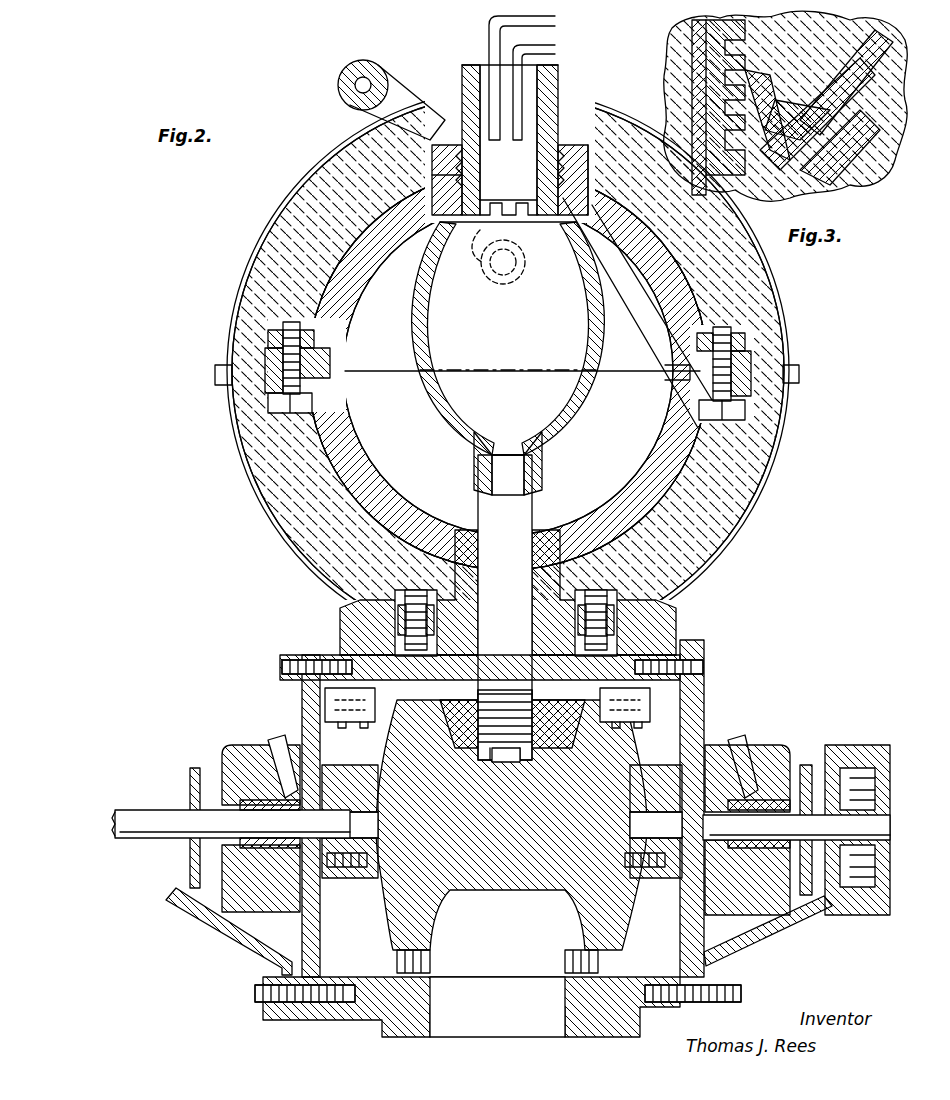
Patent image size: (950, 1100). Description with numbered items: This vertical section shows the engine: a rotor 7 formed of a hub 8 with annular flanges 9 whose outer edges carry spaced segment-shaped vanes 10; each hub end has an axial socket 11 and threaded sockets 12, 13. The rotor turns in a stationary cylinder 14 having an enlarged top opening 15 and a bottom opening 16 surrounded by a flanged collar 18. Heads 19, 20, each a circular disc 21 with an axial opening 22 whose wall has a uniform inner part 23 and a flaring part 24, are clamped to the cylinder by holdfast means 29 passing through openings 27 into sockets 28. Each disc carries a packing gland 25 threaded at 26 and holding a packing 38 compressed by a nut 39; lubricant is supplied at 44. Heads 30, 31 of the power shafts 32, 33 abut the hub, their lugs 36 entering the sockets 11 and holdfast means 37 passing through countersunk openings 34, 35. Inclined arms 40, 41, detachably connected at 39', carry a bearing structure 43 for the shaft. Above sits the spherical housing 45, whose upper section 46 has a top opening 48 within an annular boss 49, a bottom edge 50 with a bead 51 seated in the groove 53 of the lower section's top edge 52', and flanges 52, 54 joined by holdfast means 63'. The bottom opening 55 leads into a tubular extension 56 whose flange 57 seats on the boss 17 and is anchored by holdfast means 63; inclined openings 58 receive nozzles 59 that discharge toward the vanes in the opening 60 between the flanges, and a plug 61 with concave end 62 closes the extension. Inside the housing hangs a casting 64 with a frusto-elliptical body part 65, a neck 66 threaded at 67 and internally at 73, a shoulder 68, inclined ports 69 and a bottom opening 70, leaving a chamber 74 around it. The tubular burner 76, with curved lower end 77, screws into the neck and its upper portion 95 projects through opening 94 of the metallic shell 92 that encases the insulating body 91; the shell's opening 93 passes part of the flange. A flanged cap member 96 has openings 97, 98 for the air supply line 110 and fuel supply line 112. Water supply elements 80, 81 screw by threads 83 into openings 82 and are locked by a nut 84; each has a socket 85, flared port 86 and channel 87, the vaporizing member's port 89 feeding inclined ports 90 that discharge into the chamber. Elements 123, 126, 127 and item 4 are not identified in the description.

In FIG. 2, the sectional metallic spherical shell 92 is at (780, 440).
In FIG. 2, the supporting arm 41 is at (380, 490).
In FIG. 2, the boss 17 is at (400, 640).
In FIG. 2, the holdfast means 63 is at (467, 466).
In FIG. 2, the holdfast means 63' is at (753, 350).
In FIG. 2, the enlarged opening 15 is at (508, 461).
In FIG. 2, the vanes 10 is at (508, 455).
In FIG. 2, the axial socket 11 is at (478, 474).
In FIG. 2, the oppositely inclined ports 90 is at (542, 262).
In FIG. 3, the oppositely inclined ports 90 is at (735, 140).
In FIG. 2, the lower end of burner 77 is at (545, 235).
In FIG. 2, the body part 65 is at (590, 318).
In FIG. 2, the ports 69 is at (425, 376).
In FIG. 2, the opening 70 is at (508, 432).
In FIG. 2, the tubular burner 76 is at (545, 92).
In FIG. 2, the threads 73 is at (440, 178).
In FIG. 2, the head 19 is at (480, 160).
In FIG. 2, the opening 98 is at (505, 42).
In FIG. 2, the flanged cap member 96 is at (525, 62).
In FIG. 2, the fuel supply line 112 is at (490, 34).
In FIG. 2, the air supply line 110 is at (492, 22).
In FIG. 2, the opening 97 is at (472, 62).
In FIG. 2, the upper portion of burner 95 is at (466, 78).
In FIG. 2, the opening 94 is at (462, 92).
In FIG. 2, the water supply element 81 is at (372, 120).
In FIG. 2, the upper semi-spherical section 46 is at (650, 275).
In FIG. 3, the upper semi-spherical section 46 is at (820, 205).
In FIG. 2, the housing 45 is at (605, 500).
In FIG. 2, the threads 67 is at (560, 160).
In FIG. 2, the vertical neck 66 is at (565, 140).
In FIG. 2, the socket 12 is at (565, 160).
In FIG. 2, the annular boss 49 is at (575, 160).
In FIG. 2, the large opening 48 is at (595, 170).
In FIG. 2, the annular shoulder 68 is at (607, 272).
In FIG. 3, the annular shoulder 68 is at (775, 135).
In FIG. 2, the casting 64 is at (598, 300).
In FIG. 3, the casting 64 is at (730, 190).
In FIG. 2, the insulating body 91 is at (735, 300).
In FIG. 3, the insulating body 91 is at (896, 174).
In FIG. 2, the annular flange 52 is at (792, 348).
In FIG. 2, the top edge 52' is at (654, 379).
In FIG. 2, the annular bead 51 is at (685, 385).
In FIG. 2, the annular groove 53 is at (690, 395).
In FIG. 2, the bottom edge 50 is at (340, 372).
In FIG. 2, the annular flange 54 is at (790, 380).
In FIG. 2, the chamber 74 is at (631, 354).
In FIG. 2, the opening 55 is at (505, 535).
In FIG. 2, the depending tubular extension 56 is at (545, 540).
In FIG. 2, the peripheral annular flange 57 is at (540, 625).
In FIG. 2, the aligning openings 58 is at (511, 644).
In FIG. 2, the nozzle 59 is at (540, 672).
In FIG. 2, the head 30 is at (299, 816).
In FIG. 2, the head 20 is at (706, 688).
In FIG. 2, the circular disc 21 is at (708, 700).
In FIG. 2, the bolt 126 is at (330, 660).
In FIG. 2, the bolt 127 is at (295, 660).
In FIG. 2, the opening 93 is at (700, 650).
In FIG. 2, the screw threaded sockets 28 is at (668, 660).
In FIG. 2, the openings 27 is at (690, 660).
In FIG. 2, the flange 123 is at (712, 690).
In FIG. 2, the head 31 is at (721, 708).
In FIG. 2, the rotor 7 is at (497, 905).
In FIG. 2, the hub 8 is at (485, 850).
In FIG. 2, the opening 60 is at (512, 807).
In FIG. 2, the plug 61 is at (488, 750).
In FIG. 2, the concave curvature 62 is at (505, 700).
In FIG. 2, the socket 13 is at (501, 800).
In FIG. 2, the annular flange 9 is at (410, 735).
In FIG. 2, the holdfast means 37 is at (501, 833).
In FIG. 2, the gear 4 is at (350, 725).
In FIG. 2, the countersunk opening 34 is at (350, 808).
In FIG. 2, the countersunk opening 35 is at (493, 882).
In FIG. 2, the lug 36 is at (497, 949).
In FIG. 2, the annular boss or packing gland 25 is at (222, 760).
In FIG. 2, the threads 26 is at (222, 872).
In FIG. 2, the compressing and retaining nut 39 is at (492, 816).
In FIG. 2, the power transmitting shaft 32 is at (135, 820).
In FIG. 2, the lubricant supply means 44 is at (258, 736).
In FIG. 2, the outer part of opening wall 24 is at (272, 740).
In FIG. 2, the inner part of opening wall 23 is at (300, 760).
In FIG. 2, the axial opening 22 is at (742, 760).
In FIG. 2, the packing 38 is at (765, 762).
In FIG. 2, the power transmitting shaft 33 is at (810, 838).
In FIG. 2, the bearing structure 43 is at (889, 922).
In FIG. 2, the supporting arm 40 is at (215, 925).
In FIG. 2, the cylinder 14 is at (368, 995).
In FIG. 2, the enlarged opening 16 is at (560, 1006).
In FIG. 2, the annular flanged collar 18 is at (548, 1037).
In FIG. 2, the holdfast means 29 is at (300, 1003).
In FIG. 2, the detachable connection 39' is at (455, 1018).
In FIG. 3, the internal socket 85 is at (720, 140).
In FIG. 3, the lock nut 84 is at (720, 58).
In FIG. 3, the water conducting channel 87 is at (853, 74).
In FIG. 3, the water supply element 80 is at (850, 50).
In FIG. 3, the flared port 86 is at (855, 125).
In FIG. 3, the threads 83 is at (904, 94).
In FIG. 3, the port 89 is at (790, 80).
In FIG. 3, the screw threaded opening 82 is at (786, 188).